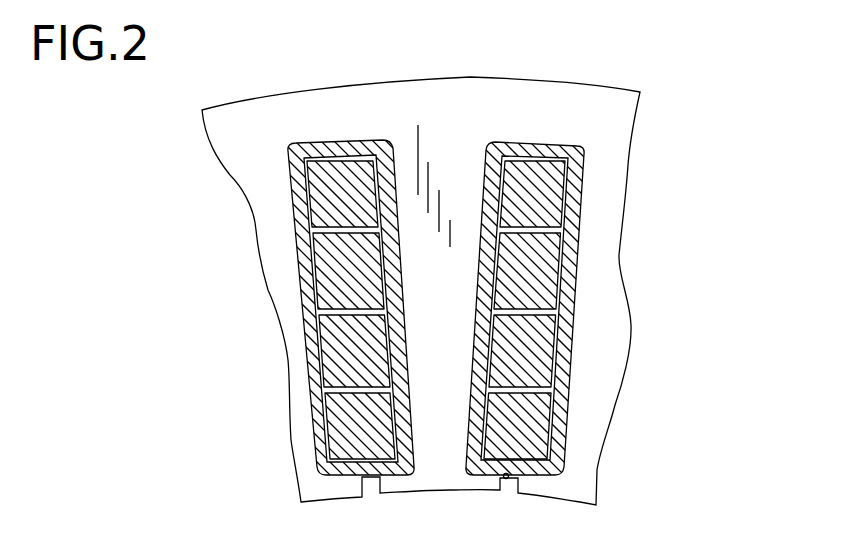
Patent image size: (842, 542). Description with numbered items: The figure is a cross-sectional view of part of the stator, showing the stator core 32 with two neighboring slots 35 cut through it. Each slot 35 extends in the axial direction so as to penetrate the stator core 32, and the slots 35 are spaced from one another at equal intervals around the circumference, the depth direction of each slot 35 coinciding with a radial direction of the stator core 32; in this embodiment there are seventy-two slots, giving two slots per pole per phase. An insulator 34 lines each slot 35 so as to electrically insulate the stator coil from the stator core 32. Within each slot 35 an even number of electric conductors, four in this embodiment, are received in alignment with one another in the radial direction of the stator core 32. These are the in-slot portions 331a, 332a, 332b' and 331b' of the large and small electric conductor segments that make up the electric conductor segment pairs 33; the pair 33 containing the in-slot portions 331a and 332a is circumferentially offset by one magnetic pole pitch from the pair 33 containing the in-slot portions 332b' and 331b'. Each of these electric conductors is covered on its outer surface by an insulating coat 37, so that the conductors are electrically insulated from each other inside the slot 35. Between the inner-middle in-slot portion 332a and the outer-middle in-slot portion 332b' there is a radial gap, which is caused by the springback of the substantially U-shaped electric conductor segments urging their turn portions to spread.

The stator core 32 is at (430, 100).
The electric conductor segment pair 33 is at (748, 160).
The in-slot portion 331a is at (528, 415).
The in-slot portion 331b' is at (421, 310).
The in-slot portion 332a is at (538, 348).
The in-slot portion 332b' is at (421, 310).
The insulator 34 is at (582, 158).
The slot 35 is at (506, 476).
The insulating coat 37 is at (296, 199).